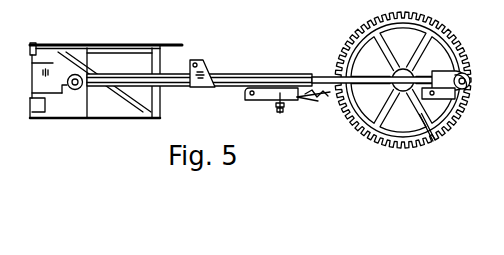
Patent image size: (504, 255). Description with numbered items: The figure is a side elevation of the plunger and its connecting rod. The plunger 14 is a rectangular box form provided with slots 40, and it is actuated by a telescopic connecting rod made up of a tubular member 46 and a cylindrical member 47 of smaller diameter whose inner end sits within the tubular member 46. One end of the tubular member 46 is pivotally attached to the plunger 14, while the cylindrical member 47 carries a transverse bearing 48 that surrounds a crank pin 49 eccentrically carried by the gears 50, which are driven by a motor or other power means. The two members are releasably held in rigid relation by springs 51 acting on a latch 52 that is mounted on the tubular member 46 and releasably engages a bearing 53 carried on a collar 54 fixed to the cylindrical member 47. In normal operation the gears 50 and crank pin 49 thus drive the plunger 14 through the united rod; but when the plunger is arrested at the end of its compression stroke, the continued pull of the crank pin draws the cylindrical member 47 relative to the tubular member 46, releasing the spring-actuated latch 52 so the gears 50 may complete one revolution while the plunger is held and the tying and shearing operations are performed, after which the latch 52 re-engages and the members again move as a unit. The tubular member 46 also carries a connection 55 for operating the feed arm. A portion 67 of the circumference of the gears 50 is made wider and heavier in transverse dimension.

The plunger 14 is at (106, 80).
The slots 40 is at (51, 90).
The tubular member 46 is at (232, 73).
The cylindrical member 47 is at (327, 73).
The transverse bearing 48 is at (469, 73).
The crank pin 49 is at (472, 90).
The gears 50 is at (375, 138).
The springs 51 is at (272, 111).
The latch 52 is at (298, 100).
The bearing 53 is at (437, 97).
The collar 54 is at (448, 73).
The connection 55 is at (201, 60).
The portion of the circumference 67 is at (448, 125).